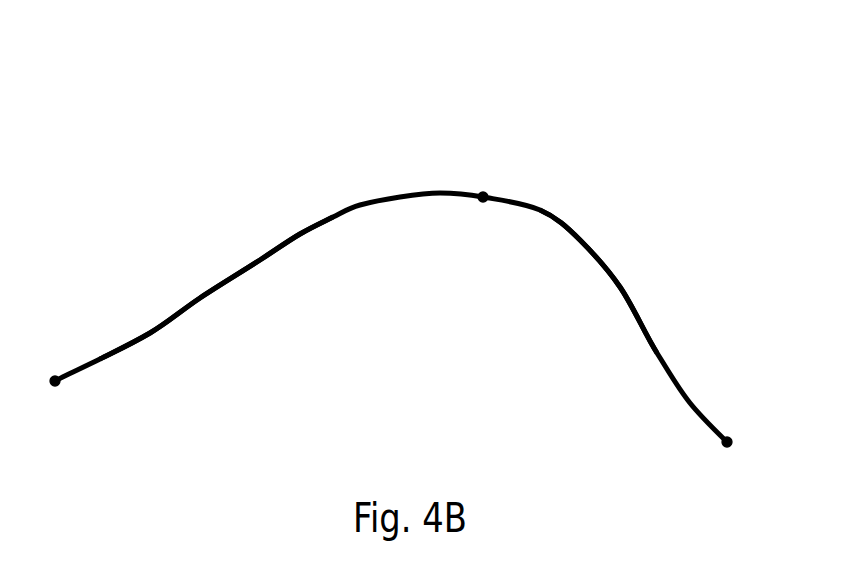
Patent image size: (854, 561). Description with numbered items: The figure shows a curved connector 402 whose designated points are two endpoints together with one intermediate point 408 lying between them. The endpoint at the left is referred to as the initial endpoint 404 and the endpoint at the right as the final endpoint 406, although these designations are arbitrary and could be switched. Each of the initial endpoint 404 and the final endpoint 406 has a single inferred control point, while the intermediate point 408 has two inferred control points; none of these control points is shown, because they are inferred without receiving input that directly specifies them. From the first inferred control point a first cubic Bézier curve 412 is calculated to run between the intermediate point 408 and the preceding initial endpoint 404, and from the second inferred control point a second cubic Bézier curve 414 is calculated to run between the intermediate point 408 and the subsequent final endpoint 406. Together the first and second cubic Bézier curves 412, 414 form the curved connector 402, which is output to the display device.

The curved connector 402 is at (447, 78).
The initial endpoint 404 is at (53, 372).
The final endpoint 406 is at (725, 448).
The intermediate point 408 is at (483, 203).
The first cubic Bézier curve 412 is at (275, 250).
The second cubic Bézier curve 414 is at (620, 285).